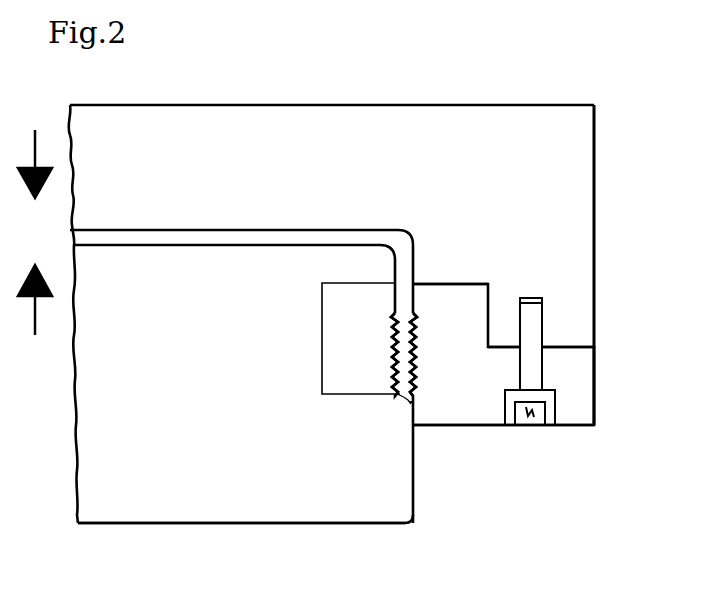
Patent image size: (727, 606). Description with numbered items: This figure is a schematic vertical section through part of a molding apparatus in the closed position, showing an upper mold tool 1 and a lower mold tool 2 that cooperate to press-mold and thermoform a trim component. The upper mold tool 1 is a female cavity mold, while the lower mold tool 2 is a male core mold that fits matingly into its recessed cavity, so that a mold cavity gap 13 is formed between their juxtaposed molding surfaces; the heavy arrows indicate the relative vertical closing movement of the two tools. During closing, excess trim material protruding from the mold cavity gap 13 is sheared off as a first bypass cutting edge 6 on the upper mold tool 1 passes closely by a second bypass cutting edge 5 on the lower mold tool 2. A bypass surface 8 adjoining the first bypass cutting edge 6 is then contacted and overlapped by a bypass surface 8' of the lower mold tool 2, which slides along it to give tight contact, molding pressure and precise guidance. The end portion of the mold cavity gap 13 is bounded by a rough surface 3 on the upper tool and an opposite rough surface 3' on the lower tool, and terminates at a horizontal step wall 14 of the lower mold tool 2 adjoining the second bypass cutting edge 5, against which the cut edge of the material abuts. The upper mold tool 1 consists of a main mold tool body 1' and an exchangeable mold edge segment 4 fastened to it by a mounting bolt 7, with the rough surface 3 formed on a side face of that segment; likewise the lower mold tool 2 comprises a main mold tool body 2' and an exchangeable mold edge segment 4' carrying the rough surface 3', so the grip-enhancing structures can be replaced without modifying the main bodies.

The upper mold tool 1 is at (331, 314).
The main mold tool body 1' is at (616, 265).
The lower mold tool 2 is at (243, 384).
The main mold tool body 2' is at (241, 548).
The rough surface 3 is at (464, 399).
The rough surface 3' is at (368, 354).
The exchangeable mold edge segment 4 is at (525, 386).
The exchangeable mold edge segment 4' is at (333, 338).
The second bypass cutting edge 5 is at (413, 400).
The first bypass cutting edge 6 is at (413, 410).
The mounting bolt 7 is at (531, 370).
The bypass surface 8 is at (362, 422).
The bypass surface 8' is at (450, 454).
The mold cavity gap 13 is at (402, 288).
The horizontal step wall 14 is at (400, 400).